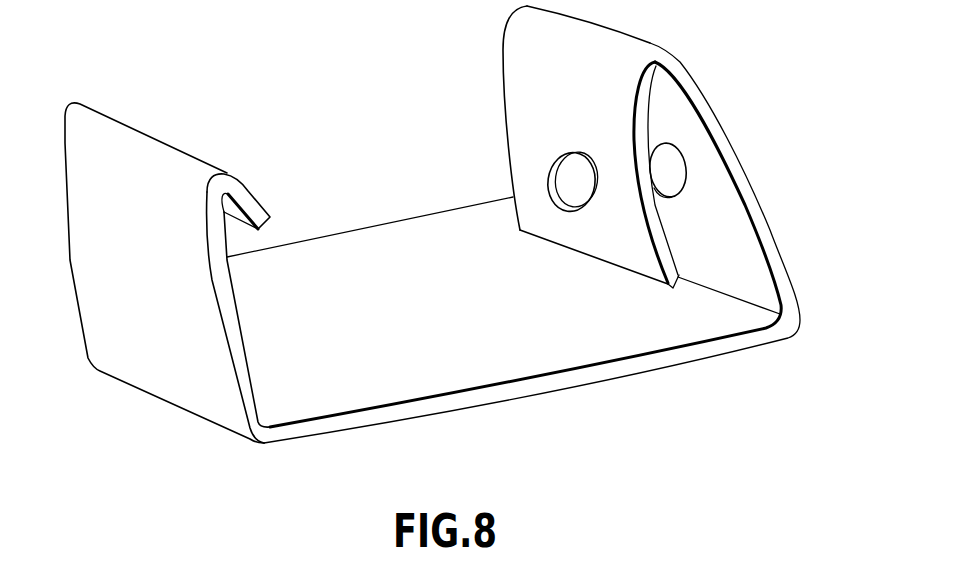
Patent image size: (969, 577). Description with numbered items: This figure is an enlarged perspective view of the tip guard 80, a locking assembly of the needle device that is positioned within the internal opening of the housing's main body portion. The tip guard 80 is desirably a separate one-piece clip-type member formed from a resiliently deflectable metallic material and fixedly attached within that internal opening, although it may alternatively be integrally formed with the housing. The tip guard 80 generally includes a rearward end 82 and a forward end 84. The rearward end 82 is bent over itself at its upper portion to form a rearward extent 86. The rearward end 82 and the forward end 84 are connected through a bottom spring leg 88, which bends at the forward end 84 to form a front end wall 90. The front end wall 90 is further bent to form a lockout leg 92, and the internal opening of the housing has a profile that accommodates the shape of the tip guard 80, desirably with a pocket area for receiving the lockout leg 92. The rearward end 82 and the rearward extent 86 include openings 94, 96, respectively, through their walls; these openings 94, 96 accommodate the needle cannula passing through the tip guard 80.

The tip guard 80 is at (324, 72).
The rearward end 82 is at (781, 237).
The forward end 84 is at (160, 365).
The rearward extent 86 is at (528, 92).
The bottom spring leg 88 is at (513, 363).
The front end wall 90 is at (237, 355).
The lockout leg 92 is at (258, 214).
The opening 94 is at (667, 165).
The opening 96 is at (572, 183).